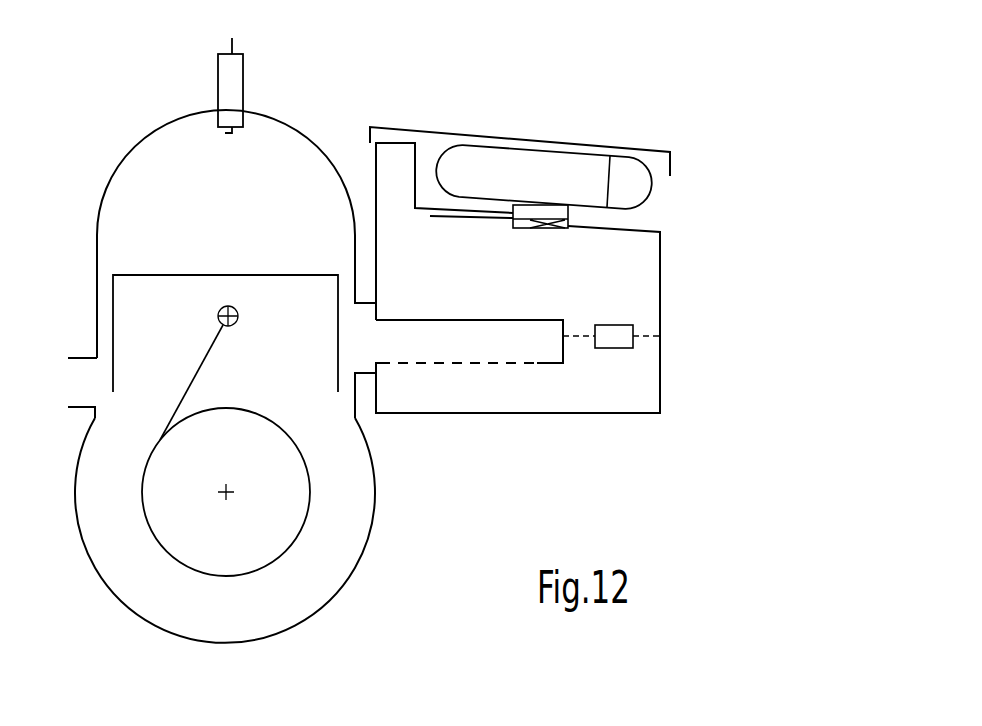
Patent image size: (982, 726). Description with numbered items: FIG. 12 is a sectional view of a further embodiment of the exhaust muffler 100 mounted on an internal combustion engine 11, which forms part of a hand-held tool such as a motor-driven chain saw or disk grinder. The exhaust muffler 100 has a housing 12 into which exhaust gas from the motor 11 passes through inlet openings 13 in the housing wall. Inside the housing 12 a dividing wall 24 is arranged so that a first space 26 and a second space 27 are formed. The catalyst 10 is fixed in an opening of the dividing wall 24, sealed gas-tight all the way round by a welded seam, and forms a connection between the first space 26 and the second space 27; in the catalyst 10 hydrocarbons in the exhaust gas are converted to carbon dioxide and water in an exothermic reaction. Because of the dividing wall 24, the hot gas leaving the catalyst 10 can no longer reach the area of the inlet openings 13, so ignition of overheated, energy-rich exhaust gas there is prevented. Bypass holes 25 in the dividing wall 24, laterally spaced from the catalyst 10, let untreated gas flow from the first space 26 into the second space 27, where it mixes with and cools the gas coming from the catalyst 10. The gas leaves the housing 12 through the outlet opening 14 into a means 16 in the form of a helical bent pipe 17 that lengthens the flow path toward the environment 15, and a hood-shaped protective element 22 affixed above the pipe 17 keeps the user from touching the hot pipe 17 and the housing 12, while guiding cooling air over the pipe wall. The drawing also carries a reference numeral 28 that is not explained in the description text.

The exhaust muffler 100 is at (705, 168).
The catalyst 10 is at (633, 348).
The internal combustion engine 11 is at (318, 573).
The housing 12 is at (660, 400).
The inlet openings 13 is at (465, 363).
The outlet opening 14 is at (566, 215).
The environment 15 is at (820, 242).
The means for lengthening the flow path 16 is at (553, 140).
The helical bent pipe 17 is at (498, 147).
The protective element 22 is at (610, 147).
The dividing wall 24 is at (655, 331).
The bypass holes 25 is at (648, 329).
The first space 26 is at (619, 407).
The second space 27 is at (644, 284).
The connection 28 is at (566, 228).